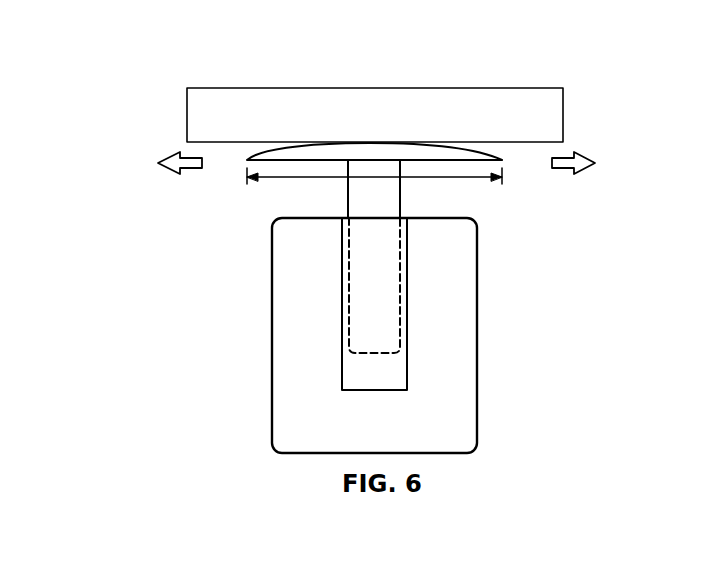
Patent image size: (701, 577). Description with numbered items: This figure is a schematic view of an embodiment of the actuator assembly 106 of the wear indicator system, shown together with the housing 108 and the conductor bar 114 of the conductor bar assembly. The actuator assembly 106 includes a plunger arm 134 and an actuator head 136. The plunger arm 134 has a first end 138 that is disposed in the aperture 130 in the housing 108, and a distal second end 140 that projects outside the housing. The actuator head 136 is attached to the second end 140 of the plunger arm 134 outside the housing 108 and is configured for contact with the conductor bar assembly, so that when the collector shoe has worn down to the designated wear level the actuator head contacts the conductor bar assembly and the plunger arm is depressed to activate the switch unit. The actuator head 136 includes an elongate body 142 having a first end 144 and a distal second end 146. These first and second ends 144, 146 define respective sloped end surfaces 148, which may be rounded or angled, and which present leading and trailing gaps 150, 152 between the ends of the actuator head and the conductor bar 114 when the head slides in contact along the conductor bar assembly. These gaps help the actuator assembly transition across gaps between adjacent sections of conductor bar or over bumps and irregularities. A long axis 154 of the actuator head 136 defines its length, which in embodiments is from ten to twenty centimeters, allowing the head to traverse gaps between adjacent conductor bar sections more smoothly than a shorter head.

The actuator assembly 106 is at (212, 267).
The housing 108 is at (477, 352).
The conductor bar 114 is at (523, 88).
The aperture 130 is at (415, 243).
The plunger arm 134 is at (363, 304).
The actuator head 136 is at (343, 147).
The first end 138 is at (377, 353).
The second end 140 is at (358, 191).
The elongate body 142 is at (308, 147).
The first end 144 is at (247, 160).
The second end 146 is at (500, 152).
The sloped end surfaces 148 is at (274, 146).
The leading gap 150 is at (252, 150).
The trailing gap 152 is at (502, 147).
The long axis 154 is at (462, 180).